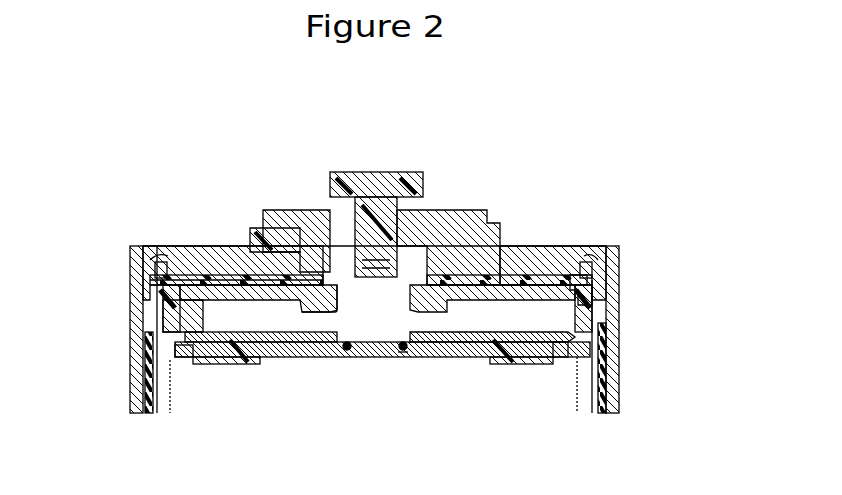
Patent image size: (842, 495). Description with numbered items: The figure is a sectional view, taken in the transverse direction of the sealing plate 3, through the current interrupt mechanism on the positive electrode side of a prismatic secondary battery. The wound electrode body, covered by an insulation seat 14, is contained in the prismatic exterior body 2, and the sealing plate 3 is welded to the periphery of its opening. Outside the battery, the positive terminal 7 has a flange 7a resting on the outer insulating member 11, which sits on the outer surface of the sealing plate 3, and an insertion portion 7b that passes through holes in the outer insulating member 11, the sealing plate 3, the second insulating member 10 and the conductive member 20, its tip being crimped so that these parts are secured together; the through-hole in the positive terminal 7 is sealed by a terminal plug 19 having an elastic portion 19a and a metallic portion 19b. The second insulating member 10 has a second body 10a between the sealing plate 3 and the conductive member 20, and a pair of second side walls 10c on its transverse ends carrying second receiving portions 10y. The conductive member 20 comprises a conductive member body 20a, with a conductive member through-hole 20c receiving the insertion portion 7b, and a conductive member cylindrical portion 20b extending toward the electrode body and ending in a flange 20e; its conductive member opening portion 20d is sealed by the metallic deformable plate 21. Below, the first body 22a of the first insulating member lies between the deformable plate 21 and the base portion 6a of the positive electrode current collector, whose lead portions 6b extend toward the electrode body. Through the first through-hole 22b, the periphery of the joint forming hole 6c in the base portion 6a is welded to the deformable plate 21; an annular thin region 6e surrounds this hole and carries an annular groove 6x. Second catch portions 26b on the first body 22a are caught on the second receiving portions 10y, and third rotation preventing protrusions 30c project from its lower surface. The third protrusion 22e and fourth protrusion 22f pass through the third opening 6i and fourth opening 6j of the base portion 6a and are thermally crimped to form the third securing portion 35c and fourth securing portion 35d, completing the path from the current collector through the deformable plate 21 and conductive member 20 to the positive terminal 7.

The prismatic exterior body 2 is at (616, 404).
The sealing plate 3 is at (465, 262).
The base portion 6a is at (462, 342).
The lead portions 6b is at (580, 393).
The joint forming hole 6c is at (348, 350).
The thin region 6e is at (403, 350).
The third opening 6i is at (205, 358).
The fourth opening 6j is at (500, 358).
The annular groove 6x is at (406, 354).
The positive terminal 7 is at (290, 185).
The flange 7a is at (308, 243).
The insertion portion 7b is at (285, 222).
The second insulating member 10 is at (192, 274).
The second body 10a is at (578, 285).
The second side walls 10c is at (163, 262).
The second receiving portions 10y is at (160, 256).
The outer insulating member 11 is at (517, 270).
The insulation seat 14 is at (595, 366).
The terminal plug 19 is at (381, 174).
The elastic portion 19a is at (398, 190).
The metallic portion 19b is at (372, 185).
The conductive member 20 is at (377, 286).
The conductive member body 20a is at (498, 262).
The conductive member cylindrical portion 20b is at (548, 280).
The conductive member through-hole 20c is at (332, 292).
The conductive member opening portion 20d is at (176, 335).
The flange 20e is at (168, 320).
The deformable plate 21 is at (240, 292).
The first body 22a is at (297, 344).
The first through-hole 22b is at (336, 347).
The third protrusion 22e is at (230, 362).
The fourth protrusion 22f is at (520, 360).
The second catch portions 26b is at (170, 292).
The third rotation preventing protrusions 30c is at (149, 352).
The third securing portion 35c is at (252, 352).
The fourth securing portion 35d is at (510, 352).